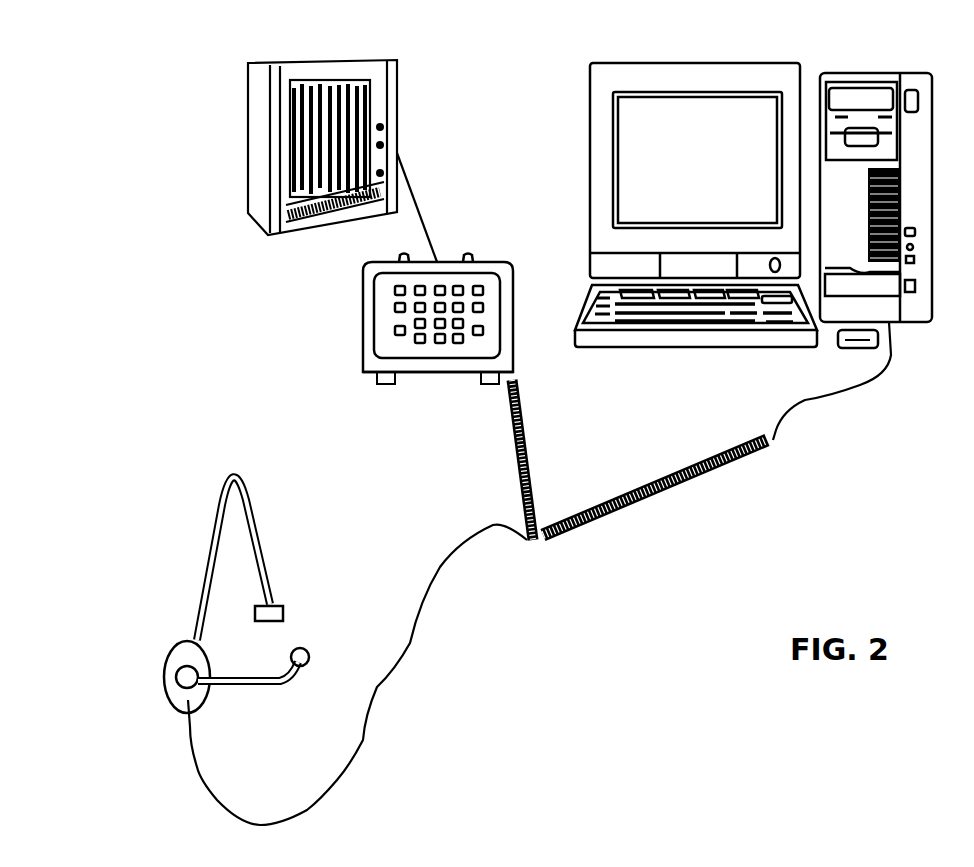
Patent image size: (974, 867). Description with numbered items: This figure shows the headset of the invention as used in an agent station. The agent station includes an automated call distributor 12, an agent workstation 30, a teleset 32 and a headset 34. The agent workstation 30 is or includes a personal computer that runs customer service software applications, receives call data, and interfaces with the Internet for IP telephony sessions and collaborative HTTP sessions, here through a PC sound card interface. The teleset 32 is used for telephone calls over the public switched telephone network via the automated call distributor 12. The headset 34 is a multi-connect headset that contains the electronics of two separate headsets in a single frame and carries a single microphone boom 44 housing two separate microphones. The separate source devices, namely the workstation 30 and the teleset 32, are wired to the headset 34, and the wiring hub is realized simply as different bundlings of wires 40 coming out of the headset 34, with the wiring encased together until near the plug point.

The automated call distributor (ACD) 12 is at (382, 61).
The agent workstation 30 is at (750, 63).
The teleset (telephone keypad) 32 is at (503, 267).
The headset unit 34 is at (211, 591).
The bundlings of wires 40 is at (593, 620).
The microphone boom 44 is at (243, 688).